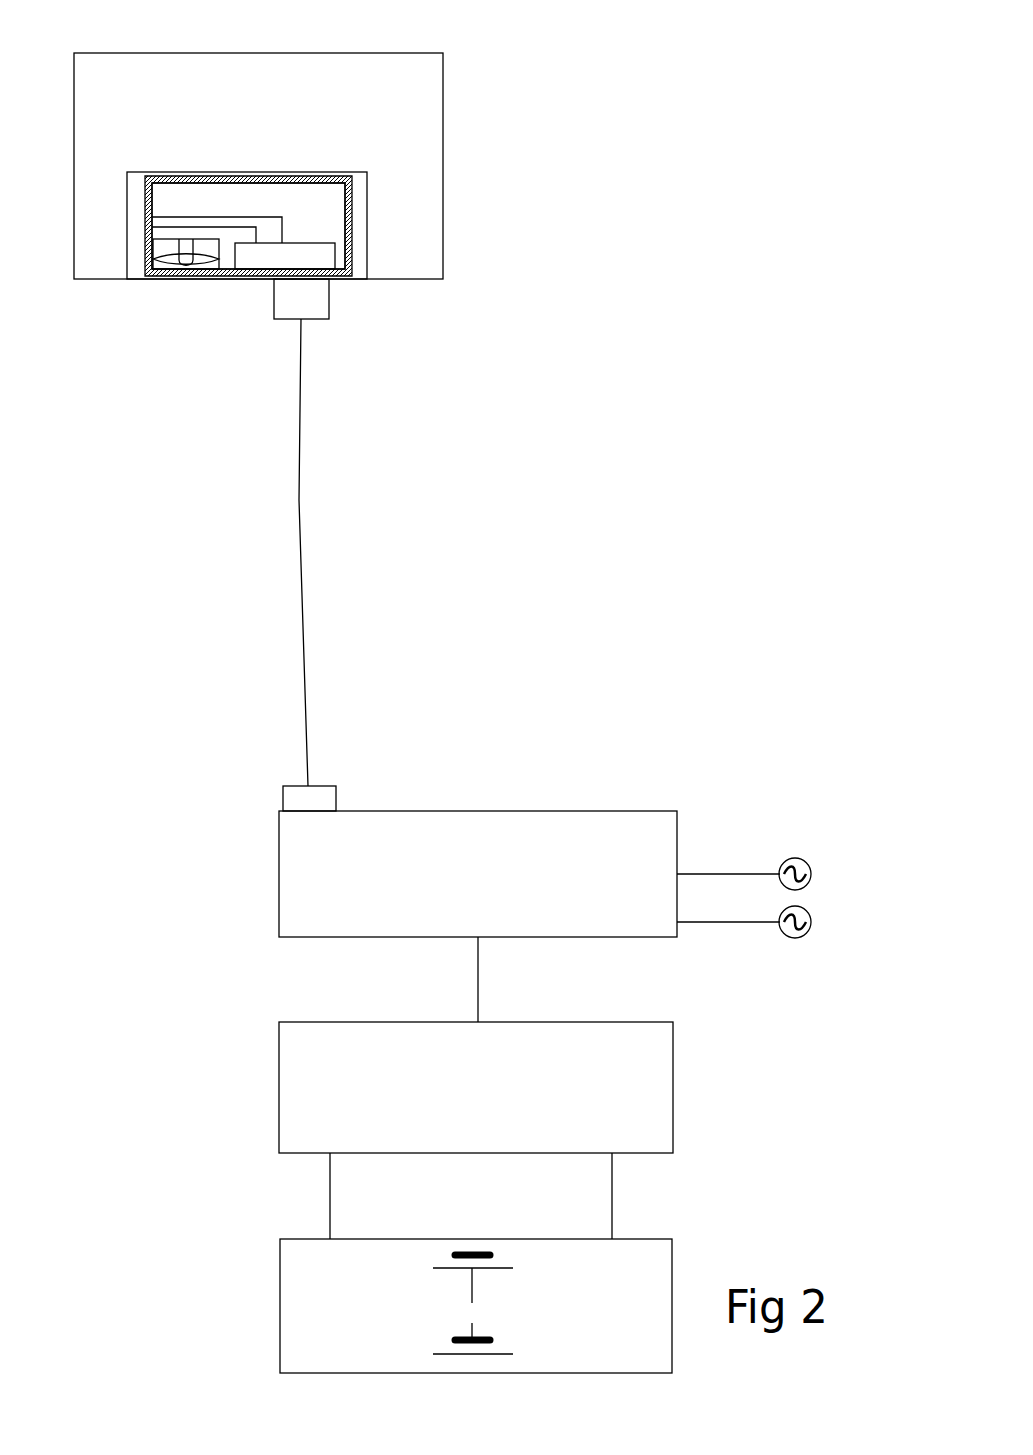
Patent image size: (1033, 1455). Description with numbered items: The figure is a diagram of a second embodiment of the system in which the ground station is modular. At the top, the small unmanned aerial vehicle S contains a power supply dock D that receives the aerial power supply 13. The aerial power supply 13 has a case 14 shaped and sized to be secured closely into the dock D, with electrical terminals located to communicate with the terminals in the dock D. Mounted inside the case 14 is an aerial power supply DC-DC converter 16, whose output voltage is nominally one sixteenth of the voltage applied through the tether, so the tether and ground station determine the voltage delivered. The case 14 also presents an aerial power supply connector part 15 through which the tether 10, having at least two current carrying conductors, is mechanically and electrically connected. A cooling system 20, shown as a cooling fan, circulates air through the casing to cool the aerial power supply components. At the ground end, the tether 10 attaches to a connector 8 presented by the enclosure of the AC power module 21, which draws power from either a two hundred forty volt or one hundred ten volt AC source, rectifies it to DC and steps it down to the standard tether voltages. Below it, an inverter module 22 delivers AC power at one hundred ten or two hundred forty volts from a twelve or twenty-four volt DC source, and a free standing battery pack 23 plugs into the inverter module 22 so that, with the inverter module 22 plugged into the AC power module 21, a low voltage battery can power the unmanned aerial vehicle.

The small unmanned aerial vehicle S is at (443, 117).
The power supply dock D is at (367, 238).
The aerial power supply 13 is at (352, 212).
The case 14 is at (271, 177).
The cooling system 20 is at (163, 269).
The aerial power supply DC-DC converter 16 is at (235, 259).
The aerial power supply connector part 15 is at (330, 286).
The tether 10 is at (299, 480).
The connector 8 is at (336, 785).
The AC power module 21 is at (417, 810).
The inverter module 22 is at (310, 1022).
The battery pack 23 is at (280, 1305).